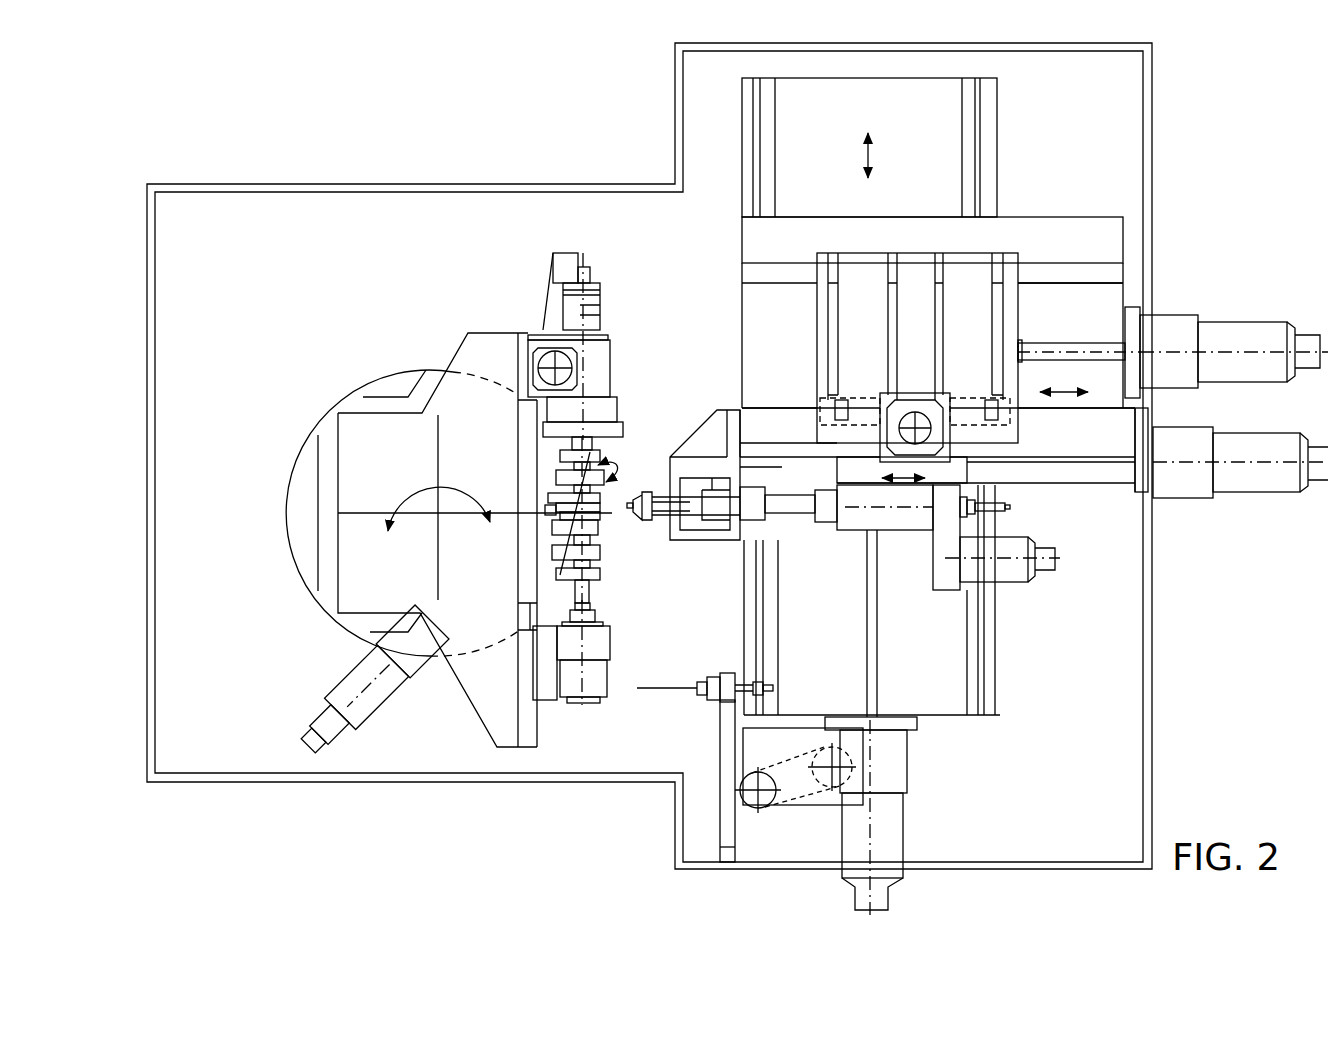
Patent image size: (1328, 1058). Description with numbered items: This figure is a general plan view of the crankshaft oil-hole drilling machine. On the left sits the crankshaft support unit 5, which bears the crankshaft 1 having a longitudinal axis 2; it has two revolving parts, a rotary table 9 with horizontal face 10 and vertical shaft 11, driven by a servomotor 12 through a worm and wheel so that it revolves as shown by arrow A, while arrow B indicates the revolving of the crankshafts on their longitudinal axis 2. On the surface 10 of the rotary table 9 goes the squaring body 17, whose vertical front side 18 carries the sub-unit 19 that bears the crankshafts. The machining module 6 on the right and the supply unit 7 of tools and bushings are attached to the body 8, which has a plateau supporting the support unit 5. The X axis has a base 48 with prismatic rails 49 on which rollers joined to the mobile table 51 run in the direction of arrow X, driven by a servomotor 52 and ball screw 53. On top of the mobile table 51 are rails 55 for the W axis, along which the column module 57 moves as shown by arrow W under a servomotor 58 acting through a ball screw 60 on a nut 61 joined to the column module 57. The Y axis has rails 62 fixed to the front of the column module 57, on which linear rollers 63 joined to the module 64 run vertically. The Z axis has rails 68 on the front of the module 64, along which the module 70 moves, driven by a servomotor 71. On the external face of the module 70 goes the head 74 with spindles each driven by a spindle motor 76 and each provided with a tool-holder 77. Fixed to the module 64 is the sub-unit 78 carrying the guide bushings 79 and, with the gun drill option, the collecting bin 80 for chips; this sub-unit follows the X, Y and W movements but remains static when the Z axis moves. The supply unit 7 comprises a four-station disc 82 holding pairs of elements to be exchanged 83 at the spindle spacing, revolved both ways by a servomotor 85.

The crankshaft 1 is at (596, 573).
The longitudinal axis 2 is at (590, 540).
The crankshaft support unit 5 is at (393, 283).
The machining module 6 is at (1097, 93).
The supply unit 7 is at (683, 743).
The body 8 is at (262, 208).
The rotary table 9 is at (300, 456).
The horizontal face 10 is at (305, 506).
The vertical shaft 11 is at (438, 513).
The servomotor 12 is at (345, 676).
The squaring body 17 is at (493, 700).
The front side 18 is at (524, 580).
The sub-unit 19 is at (627, 420).
The base 48 is at (932, 677).
The prismatic guides or rails 49 is at (972, 100).
The module or mobile table 51 is at (760, 240).
The servomotor 52 is at (885, 853).
The ball screw 53 is at (877, 667).
The rails 55 is at (1105, 275).
The column module 57 is at (855, 313).
The servomotor 58 is at (1270, 338).
The ball screw 60 is at (1110, 343).
The nut 61 is at (1022, 345).
The rails 62 is at (990, 416).
The linear rollers 63 is at (984, 408).
The module 64 is at (835, 445).
The rails 68 is at (1105, 462).
The module 70 is at (965, 498).
The servomotor 71 is at (1275, 483).
The head 74 is at (875, 522).
The spindle motor 76 is at (1012, 572).
The tool-holder 77 is at (785, 507).
The sub-unit 78 is at (673, 423).
The bushings 79 is at (637, 495).
The collecting bin 80 is at (697, 545).
The disc 82 is at (728, 820).
The elements to be exchanged 83 is at (727, 682).
The servomotor 85 is at (828, 790).